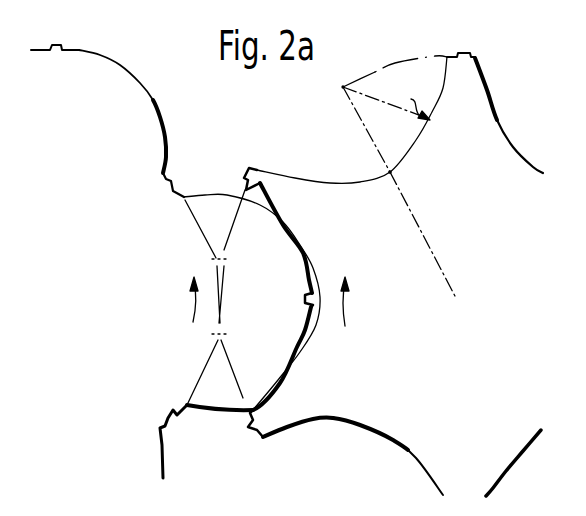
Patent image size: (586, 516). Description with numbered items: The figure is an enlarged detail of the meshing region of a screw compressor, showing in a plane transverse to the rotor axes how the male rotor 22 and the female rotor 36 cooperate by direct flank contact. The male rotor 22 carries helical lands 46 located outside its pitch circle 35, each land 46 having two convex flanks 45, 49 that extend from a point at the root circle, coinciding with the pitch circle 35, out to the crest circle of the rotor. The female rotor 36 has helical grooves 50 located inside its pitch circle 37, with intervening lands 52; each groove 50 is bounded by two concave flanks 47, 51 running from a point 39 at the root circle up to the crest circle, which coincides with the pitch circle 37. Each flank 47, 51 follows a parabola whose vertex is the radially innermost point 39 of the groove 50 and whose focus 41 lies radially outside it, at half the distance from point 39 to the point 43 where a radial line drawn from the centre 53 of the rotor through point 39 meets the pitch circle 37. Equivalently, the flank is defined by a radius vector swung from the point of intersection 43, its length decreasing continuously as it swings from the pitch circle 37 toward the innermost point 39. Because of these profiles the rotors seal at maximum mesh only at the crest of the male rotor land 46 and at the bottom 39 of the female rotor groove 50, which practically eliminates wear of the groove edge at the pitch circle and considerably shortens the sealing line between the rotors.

The male rotor 22 is at (133, 107).
The pitch circle of the male rotor 35 is at (203, 234).
The female rotor 36 is at (426, 438).
The pitch circle of the female rotor 37 is at (427, 58).
The radially innermost point of the groove 39 is at (391, 172).
The focus 41 is at (366, 127).
The point of intersection with the pitch circle 43 is at (350, 66).
The flank of the male rotor land 45 is at (231, 166).
The helical land of the male rotor 46 is at (200, 217).
The flank of the female rotor groove 47 is at (440, 90).
The flank of the male rotor land 49 is at (213, 408).
The helical groove of the female rotor 50 is at (303, 150).
The flank of the female rotor groove 51 is at (325, 181).
The land of the female rotor 52 is at (303, 413).
The centre of the rotor 53 is at (458, 297).